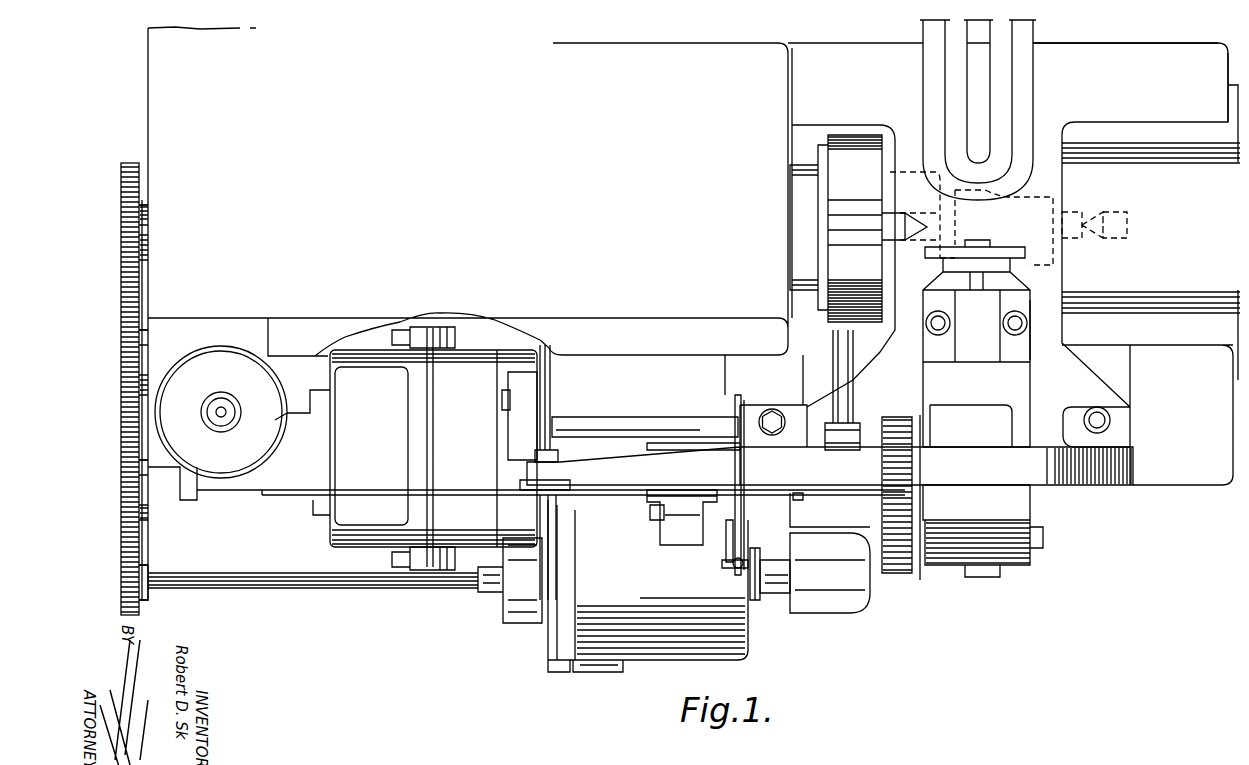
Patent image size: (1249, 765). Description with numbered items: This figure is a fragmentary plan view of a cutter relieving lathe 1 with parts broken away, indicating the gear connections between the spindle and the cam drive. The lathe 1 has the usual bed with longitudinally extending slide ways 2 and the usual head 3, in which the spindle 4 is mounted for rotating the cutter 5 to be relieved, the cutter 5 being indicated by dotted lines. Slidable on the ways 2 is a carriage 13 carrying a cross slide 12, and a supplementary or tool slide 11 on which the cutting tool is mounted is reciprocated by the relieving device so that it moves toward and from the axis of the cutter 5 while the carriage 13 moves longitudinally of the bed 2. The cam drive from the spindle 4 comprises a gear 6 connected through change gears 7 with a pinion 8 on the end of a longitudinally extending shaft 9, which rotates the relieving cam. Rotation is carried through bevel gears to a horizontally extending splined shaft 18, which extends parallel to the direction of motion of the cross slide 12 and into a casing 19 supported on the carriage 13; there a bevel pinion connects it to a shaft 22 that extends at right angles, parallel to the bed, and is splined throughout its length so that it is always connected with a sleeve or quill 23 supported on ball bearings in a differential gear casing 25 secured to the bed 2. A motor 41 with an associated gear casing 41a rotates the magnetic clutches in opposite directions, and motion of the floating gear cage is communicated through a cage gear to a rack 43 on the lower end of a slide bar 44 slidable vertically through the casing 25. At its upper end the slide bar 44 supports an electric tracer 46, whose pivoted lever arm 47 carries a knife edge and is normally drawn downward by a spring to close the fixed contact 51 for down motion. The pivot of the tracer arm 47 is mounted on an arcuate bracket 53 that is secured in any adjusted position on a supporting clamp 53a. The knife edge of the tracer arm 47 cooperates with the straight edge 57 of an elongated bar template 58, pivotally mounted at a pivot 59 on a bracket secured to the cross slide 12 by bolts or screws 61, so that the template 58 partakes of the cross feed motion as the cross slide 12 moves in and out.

The lathe 1 is at (148, 96).
The slide ways 2 is at (1171, 164).
The head 3 is at (470, 199).
The spindle 4 is at (148, 202).
The cutter 5 is at (1010, 195).
The gear 6 is at (121, 188).
The change gears 7 is at (121, 341).
The pinion 8 is at (121, 567).
The shaft 9 is at (306, 586).
The tool slide 11 is at (1030, 296).
The cross slide 12 is at (1052, 293).
The carriage 13 is at (1130, 82).
The splined shaft 18 is at (848, 404).
The casing 19 is at (870, 592).
The shaft 22 is at (775, 600).
The sleeve or quill 23 is at (758, 602).
The differential gear casing 25 is at (648, 586).
The motor 41 is at (239, 430).
The gear casing 41a is at (433, 448).
The rack 43 is at (690, 548).
The slide bar 44 is at (685, 520).
The electric tracer 46 is at (742, 530).
The tracer lever arm 47 is at (738, 465).
The fixed contact 51 is at (740, 570).
The arcuate bracket 53 is at (730, 575).
The supporting clamp 53a is at (727, 545).
The straight edge 57 is at (476, 470).
The template 58 is at (628, 495).
The pivot 59 is at (560, 450).
The bolts or screws 61 is at (1090, 410).